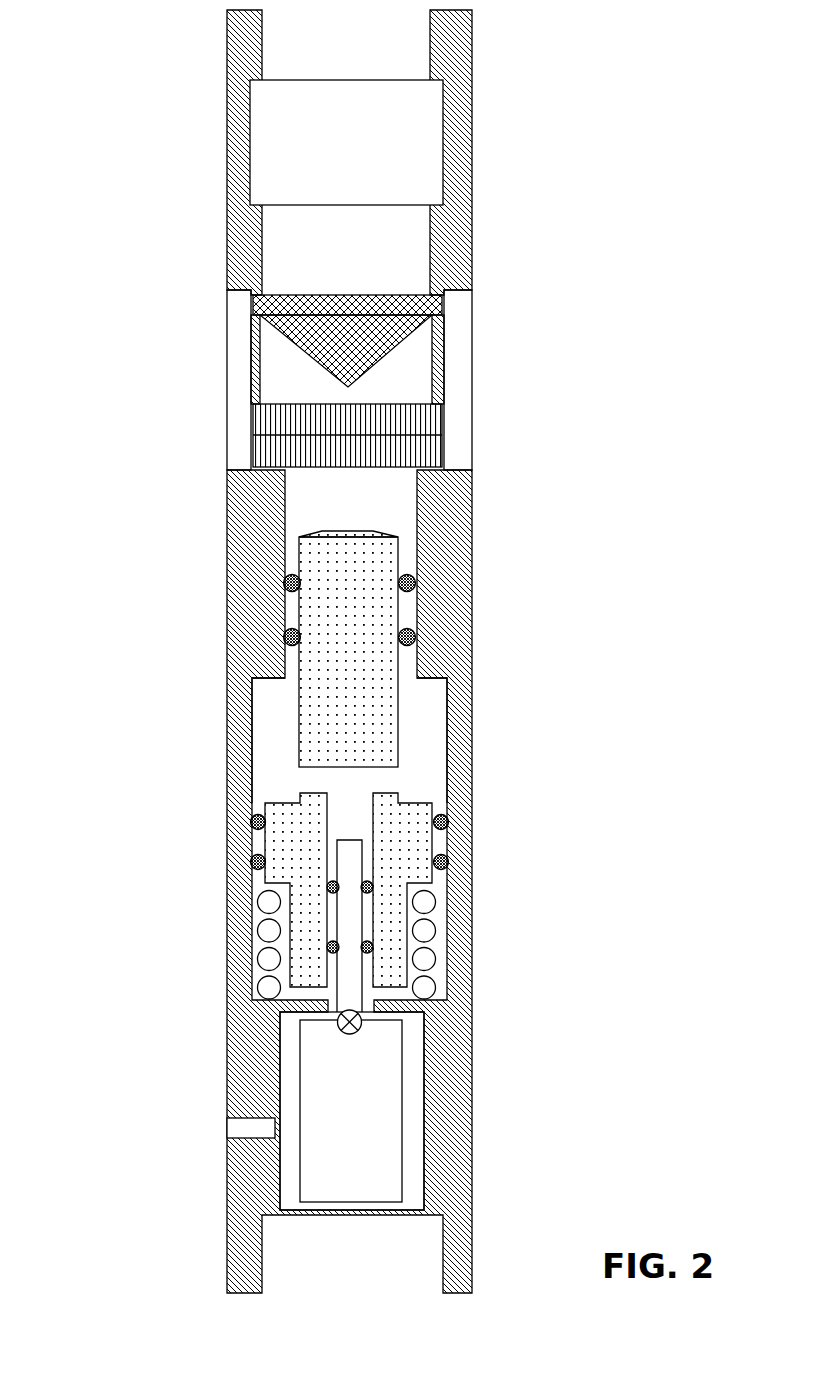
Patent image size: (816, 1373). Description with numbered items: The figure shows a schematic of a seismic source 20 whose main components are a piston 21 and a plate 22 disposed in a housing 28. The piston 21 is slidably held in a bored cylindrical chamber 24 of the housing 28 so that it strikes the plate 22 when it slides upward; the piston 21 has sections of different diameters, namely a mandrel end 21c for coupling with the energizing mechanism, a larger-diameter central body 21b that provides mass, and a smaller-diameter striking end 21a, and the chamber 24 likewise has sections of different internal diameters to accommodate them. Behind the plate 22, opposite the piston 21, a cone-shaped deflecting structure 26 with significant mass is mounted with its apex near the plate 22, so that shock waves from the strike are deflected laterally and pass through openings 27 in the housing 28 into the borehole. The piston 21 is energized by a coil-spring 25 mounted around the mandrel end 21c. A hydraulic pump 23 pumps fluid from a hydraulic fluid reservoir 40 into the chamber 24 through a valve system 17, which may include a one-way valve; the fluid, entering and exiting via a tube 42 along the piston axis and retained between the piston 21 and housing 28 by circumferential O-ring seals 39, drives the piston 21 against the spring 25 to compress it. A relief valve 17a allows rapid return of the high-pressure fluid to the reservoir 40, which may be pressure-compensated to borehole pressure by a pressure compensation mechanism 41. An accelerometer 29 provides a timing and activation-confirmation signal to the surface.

The seismic source 20 is at (152, 195).
The accelerometer 29 is at (334, 178).
The openings 27 is at (245, 368).
The deflecting structure 26 is at (370, 345).
The plate 22 is at (432, 447).
The piston 21 is at (585, 468).
The striking end 21a is at (372, 532).
The central body 21b is at (386, 620).
The mandrel end 21c is at (418, 843).
The O-ring seals 39 is at (284, 580).
The cylindrical chamber 24 is at (270, 770).
The tube 42 is at (348, 920).
The coil-spring 25 is at (424, 935).
The valve system 17 is at (342, 1026).
The relief valve 17a is at (357, 1024).
The hydraulic pump 23 is at (337, 1131).
The hydraulic fluid reservoir 40 is at (414, 1160).
The pressure compensation mechanism 41 is at (230, 1127).
The housing 28 is at (240, 1197).